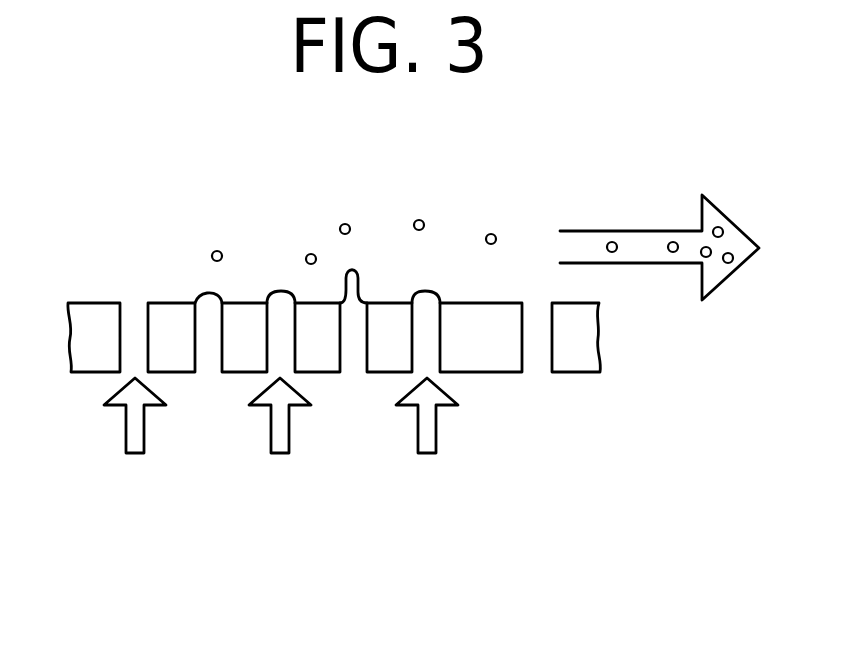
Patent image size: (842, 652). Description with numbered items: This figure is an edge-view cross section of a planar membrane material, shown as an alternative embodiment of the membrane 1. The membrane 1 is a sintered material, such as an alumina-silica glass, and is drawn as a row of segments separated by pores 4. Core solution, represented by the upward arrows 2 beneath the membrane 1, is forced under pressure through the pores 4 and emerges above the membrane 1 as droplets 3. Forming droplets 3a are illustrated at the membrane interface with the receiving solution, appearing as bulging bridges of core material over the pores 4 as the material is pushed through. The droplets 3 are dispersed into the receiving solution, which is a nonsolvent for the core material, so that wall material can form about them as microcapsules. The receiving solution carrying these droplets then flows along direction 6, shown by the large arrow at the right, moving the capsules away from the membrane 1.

The membrane 1 is at (172, 323).
The arrows 2 is at (417, 445).
The droplets 3 is at (421, 220).
The forming droplets 3a is at (202, 297).
The pores 4 is at (423, 373).
The direction 6 is at (687, 238).